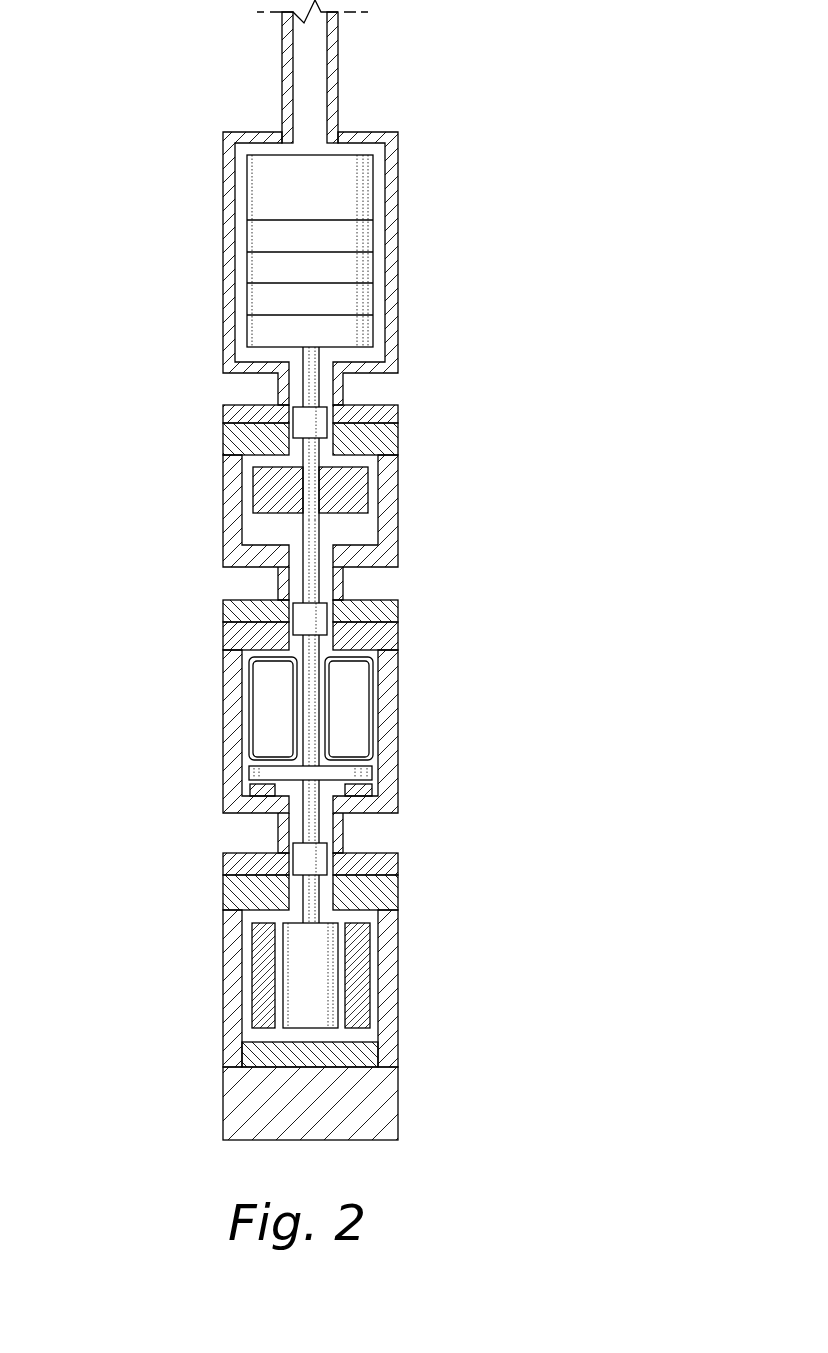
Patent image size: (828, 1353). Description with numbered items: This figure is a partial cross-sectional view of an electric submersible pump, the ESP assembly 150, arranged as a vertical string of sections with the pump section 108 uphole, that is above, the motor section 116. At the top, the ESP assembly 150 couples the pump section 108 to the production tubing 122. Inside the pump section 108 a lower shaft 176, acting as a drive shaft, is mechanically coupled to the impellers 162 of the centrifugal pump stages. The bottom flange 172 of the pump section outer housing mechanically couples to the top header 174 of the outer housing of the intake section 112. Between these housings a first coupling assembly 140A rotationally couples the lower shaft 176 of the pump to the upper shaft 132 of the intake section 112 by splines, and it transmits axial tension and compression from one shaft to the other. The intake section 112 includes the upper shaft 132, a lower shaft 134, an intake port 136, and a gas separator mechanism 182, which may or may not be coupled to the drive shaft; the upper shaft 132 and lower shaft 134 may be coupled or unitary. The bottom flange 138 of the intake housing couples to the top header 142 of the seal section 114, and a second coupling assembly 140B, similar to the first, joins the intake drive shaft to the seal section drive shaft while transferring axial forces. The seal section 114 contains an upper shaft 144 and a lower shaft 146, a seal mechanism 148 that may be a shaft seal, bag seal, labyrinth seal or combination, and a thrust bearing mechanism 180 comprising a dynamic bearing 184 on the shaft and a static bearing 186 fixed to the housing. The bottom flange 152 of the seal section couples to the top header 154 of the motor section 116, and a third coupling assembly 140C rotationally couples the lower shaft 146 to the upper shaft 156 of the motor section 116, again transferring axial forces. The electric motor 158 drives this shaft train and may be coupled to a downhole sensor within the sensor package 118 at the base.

The production tubing 122 is at (338, 72).
The ESP assembly 150 is at (578, 146).
The pump section 108 is at (426, 292).
The impellers 162 is at (245, 300).
The lower shaft 176 is at (321, 385).
The bottom flange 172 is at (233, 417).
The top header 174 is at (232, 447).
The first coupling assembly 140A is at (310, 425).
The gas separator mechanism 182 is at (260, 482).
The upper shaft 132 is at (321, 459).
The intake section 112 is at (419, 513).
The lower shaft 134 is at (321, 583).
The intake port 136 is at (250, 573).
The bottom flange 138 is at (234, 612).
The top header 142 is at (234, 642).
The second coupling assembly 140B is at (308, 624).
The upper shaft 144 is at (321, 654).
The seal mechanism 148 is at (272, 713).
The seal section 114 is at (418, 722).
The dynamic bearing 184 is at (373, 773).
The static bearing 186 is at (373, 790).
The thrust bearing mechanism 180 is at (313, 731).
The lower shaft 146 is at (321, 826).
The bottom flange 152 is at (234, 869).
The top header 154 is at (237, 892).
The third coupling assembly 140C is at (308, 861).
The upper shaft 156 is at (321, 886).
The electric motor 158 is at (242, 975).
The motor section 116 is at (418, 952).
The sensor package 118 is at (418, 1094).